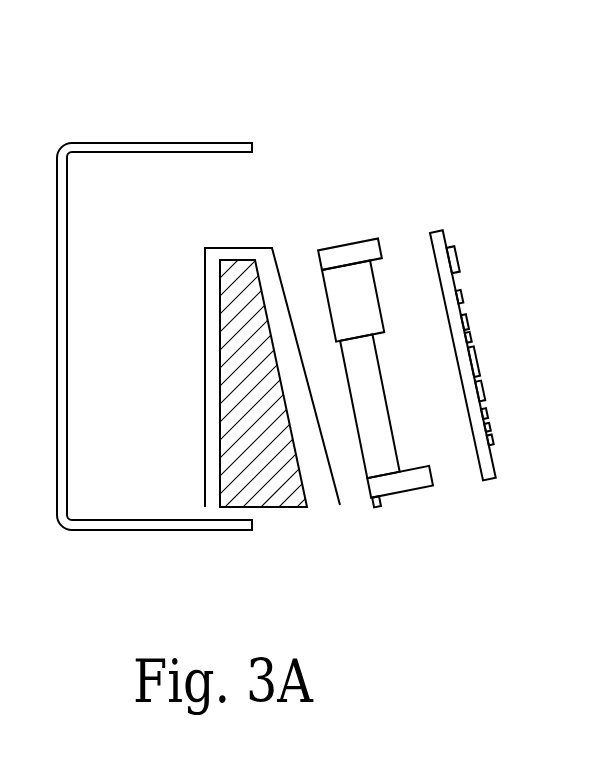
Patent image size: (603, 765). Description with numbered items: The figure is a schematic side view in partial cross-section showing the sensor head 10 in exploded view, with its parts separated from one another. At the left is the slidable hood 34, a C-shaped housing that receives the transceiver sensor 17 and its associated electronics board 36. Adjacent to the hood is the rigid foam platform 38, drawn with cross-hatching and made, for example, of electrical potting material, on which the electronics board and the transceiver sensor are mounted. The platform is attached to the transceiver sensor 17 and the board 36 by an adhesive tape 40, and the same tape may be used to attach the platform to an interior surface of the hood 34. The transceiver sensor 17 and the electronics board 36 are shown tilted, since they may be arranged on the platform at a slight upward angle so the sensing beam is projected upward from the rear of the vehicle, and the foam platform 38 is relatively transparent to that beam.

The sensor head 10 is at (332, 102).
The transceiver sensor 17 is at (343, 298).
The slidable hood 34 is at (118, 151).
The electronics board 36 is at (448, 288).
The rigid foam platform 38 is at (270, 503).
The adhesive tape 40 is at (210, 252).